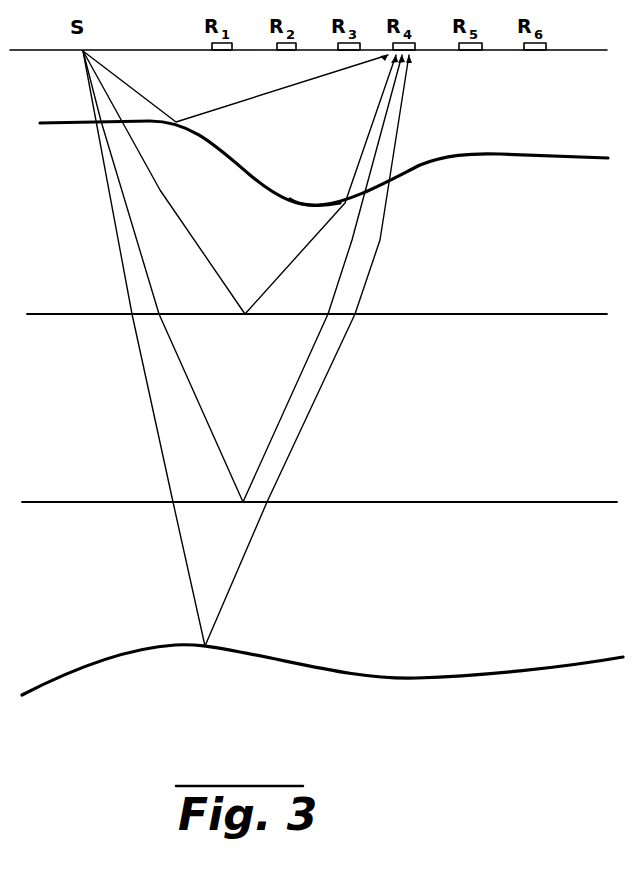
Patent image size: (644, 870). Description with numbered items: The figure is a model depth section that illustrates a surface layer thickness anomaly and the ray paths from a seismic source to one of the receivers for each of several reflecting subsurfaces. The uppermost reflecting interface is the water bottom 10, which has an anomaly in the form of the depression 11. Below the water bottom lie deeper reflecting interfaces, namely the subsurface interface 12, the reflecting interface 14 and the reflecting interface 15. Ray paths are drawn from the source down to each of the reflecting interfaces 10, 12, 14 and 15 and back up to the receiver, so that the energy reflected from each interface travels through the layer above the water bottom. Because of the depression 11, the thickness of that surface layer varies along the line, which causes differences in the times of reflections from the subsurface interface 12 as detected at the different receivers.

The water bottom 10 is at (453, 153).
The depression 11 is at (316, 205).
The subsurface interface 12 is at (440, 314).
The reflecting interface 14 is at (437, 502).
The reflecting interface 15 is at (430, 678).